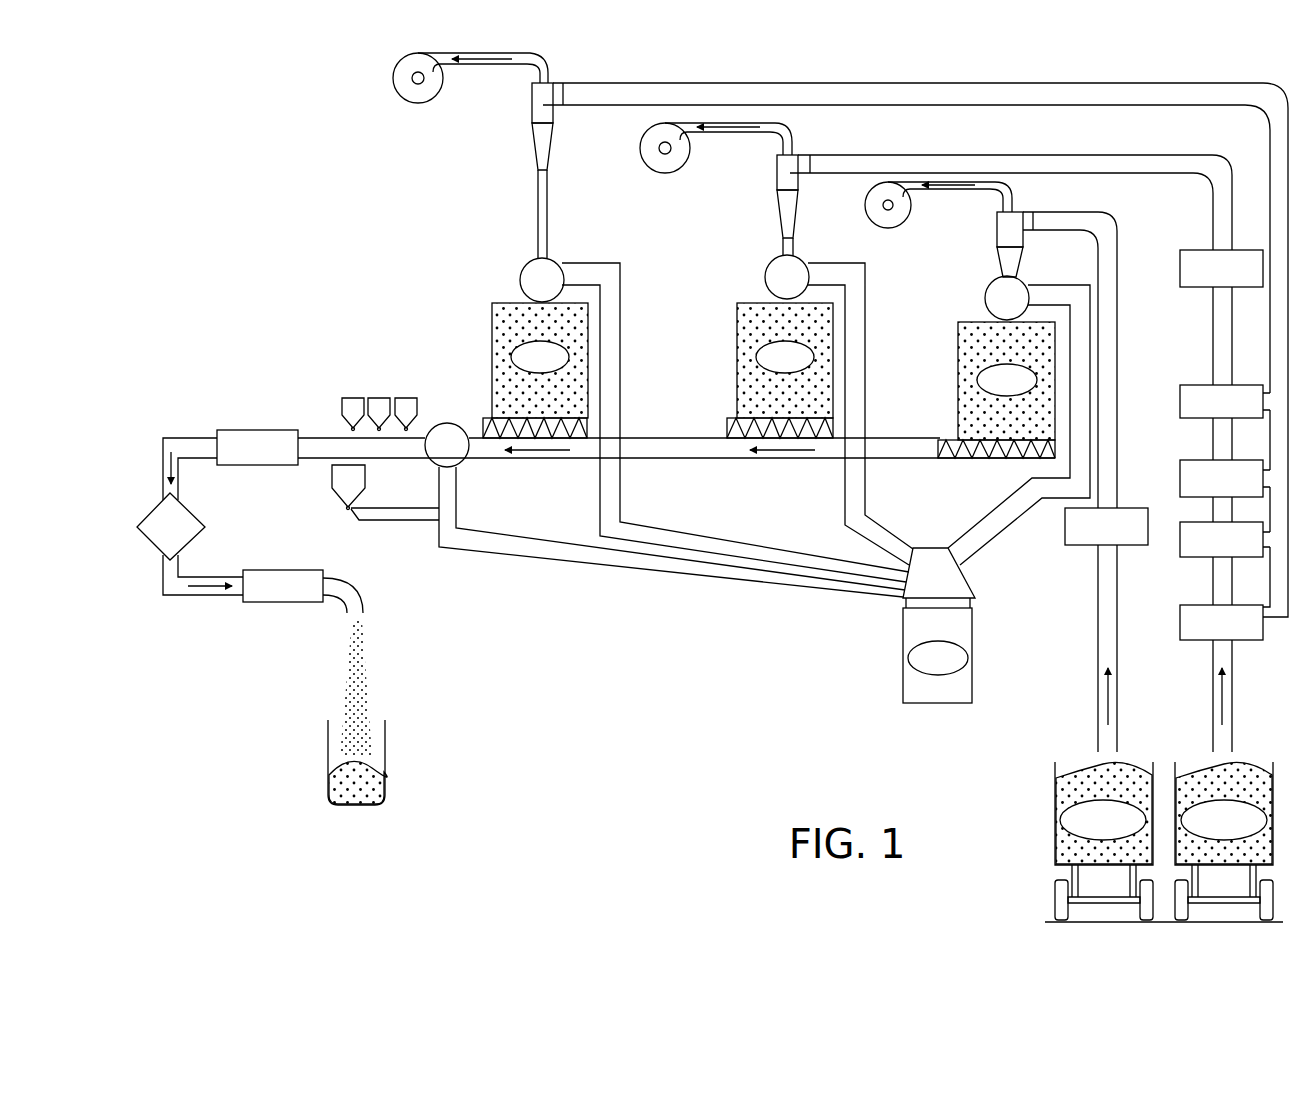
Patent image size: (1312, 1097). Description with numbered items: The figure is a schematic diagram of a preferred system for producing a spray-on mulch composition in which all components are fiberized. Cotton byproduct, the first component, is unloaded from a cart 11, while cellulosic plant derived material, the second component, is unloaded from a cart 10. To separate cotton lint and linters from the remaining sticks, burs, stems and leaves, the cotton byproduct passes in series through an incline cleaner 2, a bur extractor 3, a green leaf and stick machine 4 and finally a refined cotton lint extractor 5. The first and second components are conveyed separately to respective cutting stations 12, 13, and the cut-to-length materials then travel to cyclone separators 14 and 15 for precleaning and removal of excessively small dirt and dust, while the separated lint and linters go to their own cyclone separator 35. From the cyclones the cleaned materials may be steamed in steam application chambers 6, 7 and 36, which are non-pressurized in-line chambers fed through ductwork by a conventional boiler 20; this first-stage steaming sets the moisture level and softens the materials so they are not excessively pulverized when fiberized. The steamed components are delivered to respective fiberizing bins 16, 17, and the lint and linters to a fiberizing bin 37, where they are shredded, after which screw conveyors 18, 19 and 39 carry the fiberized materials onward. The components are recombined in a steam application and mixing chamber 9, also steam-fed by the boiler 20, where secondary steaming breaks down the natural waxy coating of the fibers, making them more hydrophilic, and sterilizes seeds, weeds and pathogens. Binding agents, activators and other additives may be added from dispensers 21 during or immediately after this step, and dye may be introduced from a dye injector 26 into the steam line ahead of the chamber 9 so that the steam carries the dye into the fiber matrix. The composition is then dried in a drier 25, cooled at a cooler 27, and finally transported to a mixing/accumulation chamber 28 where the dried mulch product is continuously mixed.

The incline cleaner 2 is at (1221, 622).
The bur extractor 3 is at (1221, 539).
The green leaf and stick machine 4 is at (1221, 478).
The refined cotton lint extractor 5 is at (1221, 401).
The steam application chamber 6 is at (839, 410).
The steam application chamber 7 is at (1019, 420).
The steam application and mixing chamber 9 is at (665, 510).
The cart 10 is at (1104, 841).
The cart 11 is at (1224, 841).
The cutting station 12 is at (1106, 630).
The cutting station 13 is at (1221, 268).
The cyclone separator 14 is at (992, 229).
The cyclone separator 15 is at (775, 171).
The fiberizing bin 16 is at (1006, 381).
The fiberizing bin 17 is at (785, 360).
The screw conveyor 18 is at (952, 440).
The screw conveyor 19 is at (718, 412).
The boiler 20 is at (939, 625).
The dispensers 21 is at (378, 390).
The drier 25 is at (257, 447).
The dye injector 26 is at (385, 492).
The cooler 27 is at (171, 526).
The mixing/accumulation chamber 28 is at (283, 586).
The cyclone separator 35 is at (530, 101).
The steam application chamber 36 is at (714, 420).
The fiberizing bin 37 is at (540, 360).
The screw conveyor 39 is at (478, 412).